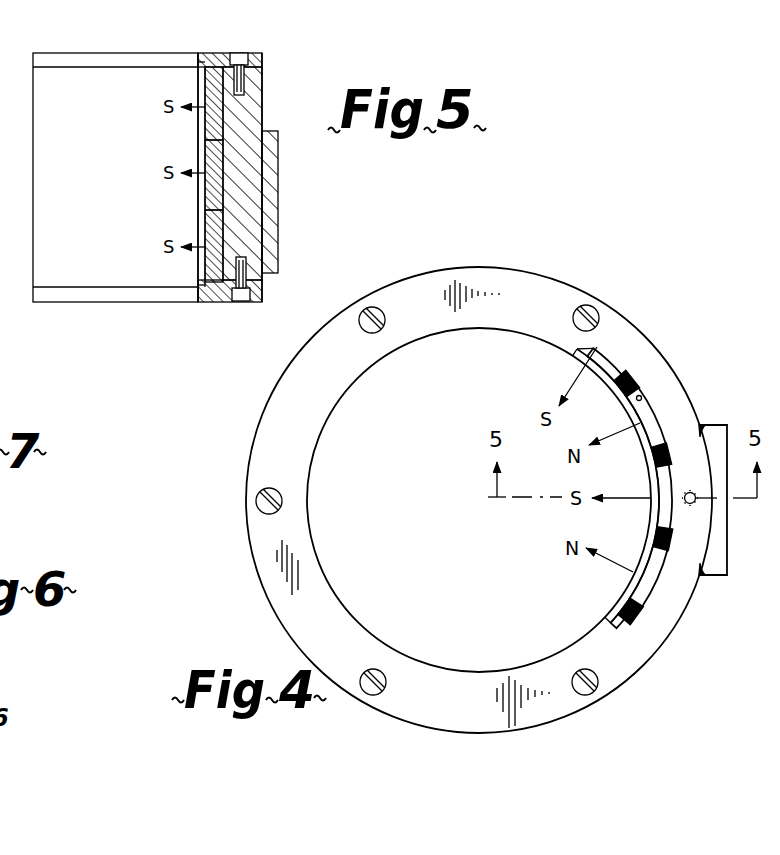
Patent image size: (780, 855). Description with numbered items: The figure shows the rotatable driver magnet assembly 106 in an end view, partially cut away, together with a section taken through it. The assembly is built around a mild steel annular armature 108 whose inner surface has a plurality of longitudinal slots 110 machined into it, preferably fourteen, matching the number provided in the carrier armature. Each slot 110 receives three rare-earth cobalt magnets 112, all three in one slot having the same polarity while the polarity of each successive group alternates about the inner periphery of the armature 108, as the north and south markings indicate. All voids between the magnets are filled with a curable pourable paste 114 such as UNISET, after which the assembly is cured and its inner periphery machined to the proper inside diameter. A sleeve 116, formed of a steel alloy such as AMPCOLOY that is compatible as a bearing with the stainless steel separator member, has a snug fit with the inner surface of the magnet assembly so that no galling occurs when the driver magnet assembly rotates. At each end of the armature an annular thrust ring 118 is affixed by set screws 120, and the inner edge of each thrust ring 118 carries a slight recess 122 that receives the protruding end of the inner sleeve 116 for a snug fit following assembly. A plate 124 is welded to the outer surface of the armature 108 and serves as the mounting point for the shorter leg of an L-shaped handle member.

In FIG. 5, the driver magnet assembly 106 is at (230, 32).
In FIG. 4, the driver magnet assembly 106 is at (590, 283).
In FIG. 5, the annular armature 108 is at (255, 90).
In FIG. 4, the annular armature 108 is at (687, 392).
In FIG. 4, the slots 110 is at (667, 390).
In FIG. 5, the rare-earth cobalt magnets 112 is at (210, 153).
In FIG. 4, the rare-earth cobalt magnets 112 is at (673, 478).
In FIG. 4, the curable pourable paste 114 is at (641, 397).
In FIG. 5, the sleeve 116 is at (205, 192).
In FIG. 4, the sleeve 116 is at (653, 513).
In FIG. 5, the annular thrust ring 118 is at (207, 53).
In FIG. 4, the annular thrust ring 118 is at (497, 278).
In FIG. 5, the set screws 120 is at (240, 55).
In FIG. 4, the set screws 120 is at (387, 673).
In FIG. 5, the recess 122 is at (202, 65).
In FIG. 5, the plate 124 is at (273, 163).
In FIG. 4, the plate 124 is at (713, 433).